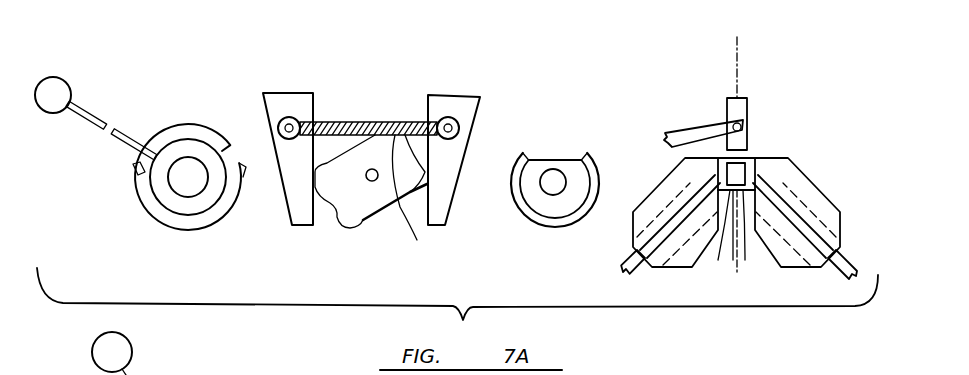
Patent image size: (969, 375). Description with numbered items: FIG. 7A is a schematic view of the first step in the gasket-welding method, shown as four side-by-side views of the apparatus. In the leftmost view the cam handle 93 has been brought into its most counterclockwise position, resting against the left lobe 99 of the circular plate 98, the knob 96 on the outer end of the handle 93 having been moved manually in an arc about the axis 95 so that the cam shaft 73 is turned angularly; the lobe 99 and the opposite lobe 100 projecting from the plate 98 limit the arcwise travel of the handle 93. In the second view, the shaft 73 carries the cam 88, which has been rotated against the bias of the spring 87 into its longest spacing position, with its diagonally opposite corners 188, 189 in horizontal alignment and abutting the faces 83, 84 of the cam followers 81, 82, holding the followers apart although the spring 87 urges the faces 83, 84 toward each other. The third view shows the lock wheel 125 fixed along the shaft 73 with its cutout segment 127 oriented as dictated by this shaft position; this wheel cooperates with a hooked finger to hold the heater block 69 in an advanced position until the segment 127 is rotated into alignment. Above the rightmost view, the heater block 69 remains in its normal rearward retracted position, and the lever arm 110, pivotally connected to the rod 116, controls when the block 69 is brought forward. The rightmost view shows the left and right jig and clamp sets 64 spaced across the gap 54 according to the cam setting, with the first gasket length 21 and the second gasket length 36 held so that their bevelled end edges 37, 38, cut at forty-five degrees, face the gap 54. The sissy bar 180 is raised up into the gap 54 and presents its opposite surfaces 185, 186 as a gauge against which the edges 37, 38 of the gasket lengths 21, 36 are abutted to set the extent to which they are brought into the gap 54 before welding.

The knob 96 is at (57, 88).
The handle 93 is at (92, 110).
The cam shaft 73 is at (188, 177).
The circular plate 98 is at (200, 220).
The left lobe 99 is at (136, 166).
The lobe 100 is at (237, 173).
The cam follower 81 is at (265, 115).
The cam follower 82 is at (482, 107).
The face 83 is at (318, 118).
The face 84 is at (427, 115).
The corner 188 is at (325, 177).
The corner 189 is at (427, 185).
The spring 87 is at (421, 201).
The cam 88 is at (375, 197).
The rod 116 is at (547, 165).
The lock wheel 125 is at (550, 207).
The segment 127 is at (583, 155).
The axis 95 is at (738, 62).
The heater block 69 is at (735, 108).
The lever arm 110 is at (707, 130).
The jig and clamp sets 64 is at (670, 280).
The surface 186 is at (752, 170).
The surface 185 is at (728, 173).
The sissy bar 180 is at (743, 185).
The gasket length 21 is at (622, 262).
The second length 36 is at (857, 272).
The bevelled end edge 37 is at (715, 239).
The bevelled end edge 38 is at (756, 239).
The gap 54 is at (749, 232).